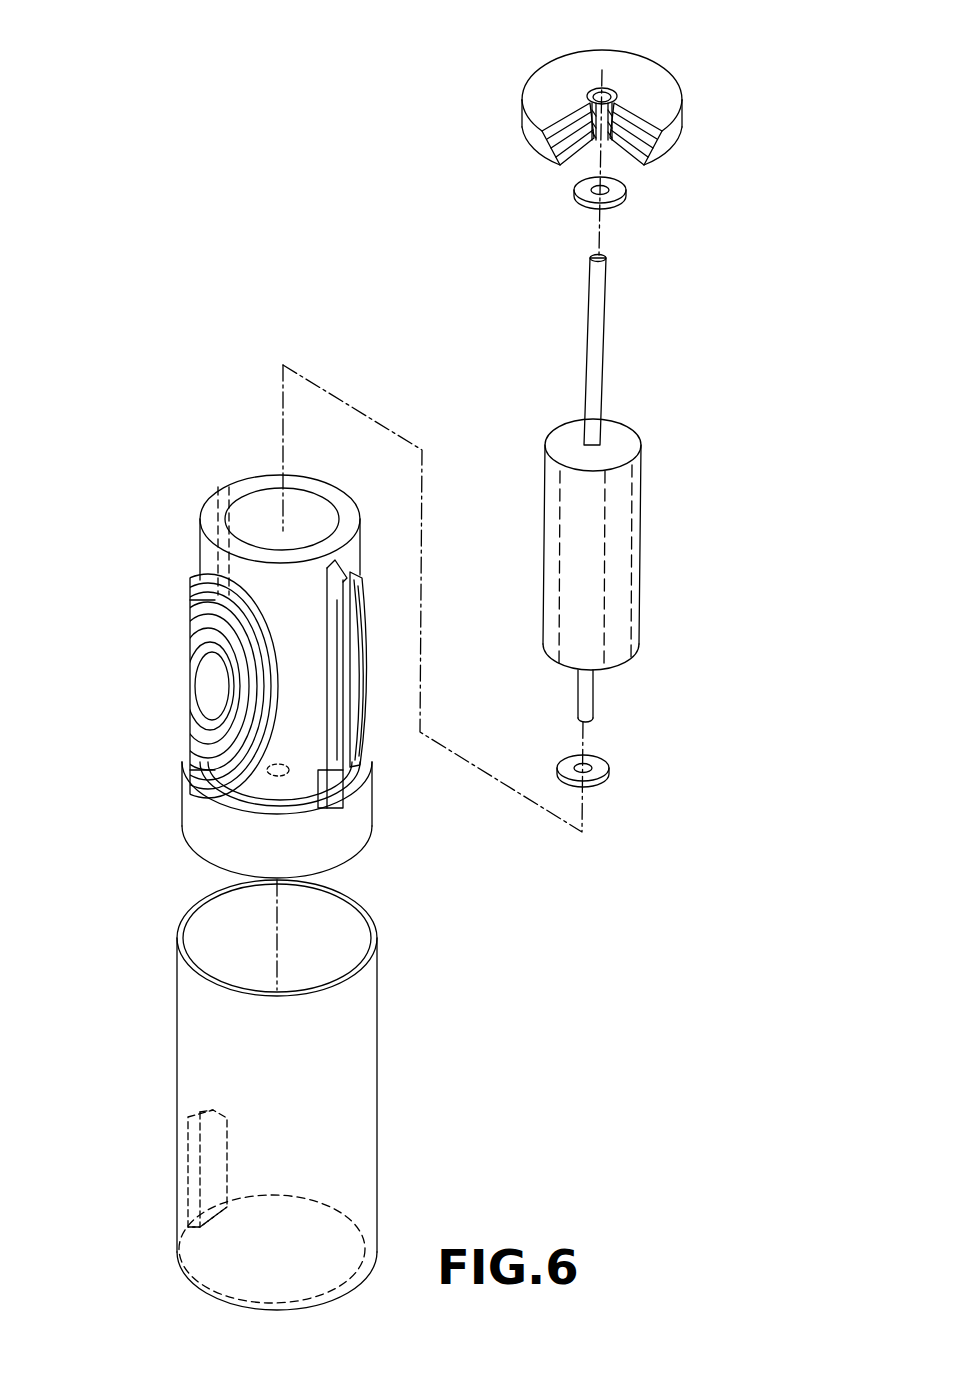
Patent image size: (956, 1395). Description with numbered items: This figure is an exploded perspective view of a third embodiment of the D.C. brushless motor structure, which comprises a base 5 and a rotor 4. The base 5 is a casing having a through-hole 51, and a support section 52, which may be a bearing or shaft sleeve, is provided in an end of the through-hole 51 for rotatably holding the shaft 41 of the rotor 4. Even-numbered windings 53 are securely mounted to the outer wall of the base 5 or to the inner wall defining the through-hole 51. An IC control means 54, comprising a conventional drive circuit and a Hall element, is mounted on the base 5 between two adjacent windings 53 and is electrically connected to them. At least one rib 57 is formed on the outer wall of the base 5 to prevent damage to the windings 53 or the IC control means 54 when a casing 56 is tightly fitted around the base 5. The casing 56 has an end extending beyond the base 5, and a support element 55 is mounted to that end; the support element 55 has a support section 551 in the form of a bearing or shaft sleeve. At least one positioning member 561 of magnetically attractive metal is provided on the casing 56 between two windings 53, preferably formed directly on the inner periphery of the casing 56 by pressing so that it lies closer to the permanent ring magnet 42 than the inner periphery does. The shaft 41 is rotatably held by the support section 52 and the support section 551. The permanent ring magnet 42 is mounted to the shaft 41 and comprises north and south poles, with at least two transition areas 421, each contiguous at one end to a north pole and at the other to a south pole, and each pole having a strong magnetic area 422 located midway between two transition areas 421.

The rotor 4 is at (543, 397).
The shaft 41 is at (588, 327).
The permanent ring magnet 42 is at (623, 437).
The transition area 421 is at (553, 548).
The strong magnetic area 422 is at (627, 572).
The base 5 is at (340, 507).
The through-hole 51 is at (302, 510).
The support section 52 is at (250, 780).
The windings 53 is at (197, 604).
The IC control means 54 is at (337, 787).
The support element 55 is at (534, 96).
The support section 551 is at (614, 88).
The casing 56 is at (365, 1053).
The positioning member 561 is at (190, 1160).
The rib 57 is at (207, 500).